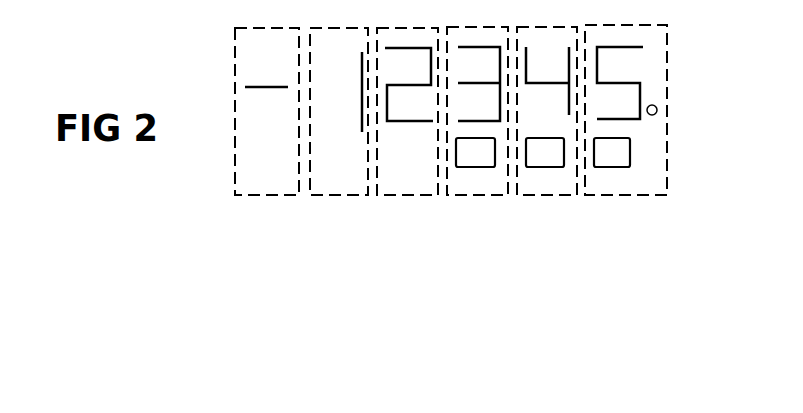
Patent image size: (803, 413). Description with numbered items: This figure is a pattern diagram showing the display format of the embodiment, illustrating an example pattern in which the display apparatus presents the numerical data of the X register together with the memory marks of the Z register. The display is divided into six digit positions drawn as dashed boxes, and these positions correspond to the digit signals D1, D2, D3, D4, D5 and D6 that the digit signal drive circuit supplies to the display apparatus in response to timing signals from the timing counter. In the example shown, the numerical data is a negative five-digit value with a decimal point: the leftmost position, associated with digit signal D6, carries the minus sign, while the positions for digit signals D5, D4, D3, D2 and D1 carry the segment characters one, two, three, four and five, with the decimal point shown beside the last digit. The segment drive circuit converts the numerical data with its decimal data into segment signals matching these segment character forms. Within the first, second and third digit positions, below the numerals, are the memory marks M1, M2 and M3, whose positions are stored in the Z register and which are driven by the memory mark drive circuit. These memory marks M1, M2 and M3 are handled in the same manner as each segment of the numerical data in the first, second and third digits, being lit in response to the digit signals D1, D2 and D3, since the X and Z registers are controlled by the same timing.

The digit signal D1 is at (633, 195).
The digit signal D2 is at (552, 195).
The digit signal D3 is at (482, 195).
The digit signal D4 is at (413, 195).
The digit signal D5 is at (342, 195).
The digit signal D6 is at (271, 195).
The memory mark M1 is at (612, 152).
The memory mark M2 is at (545, 152).
The memory mark M3 is at (475, 152).